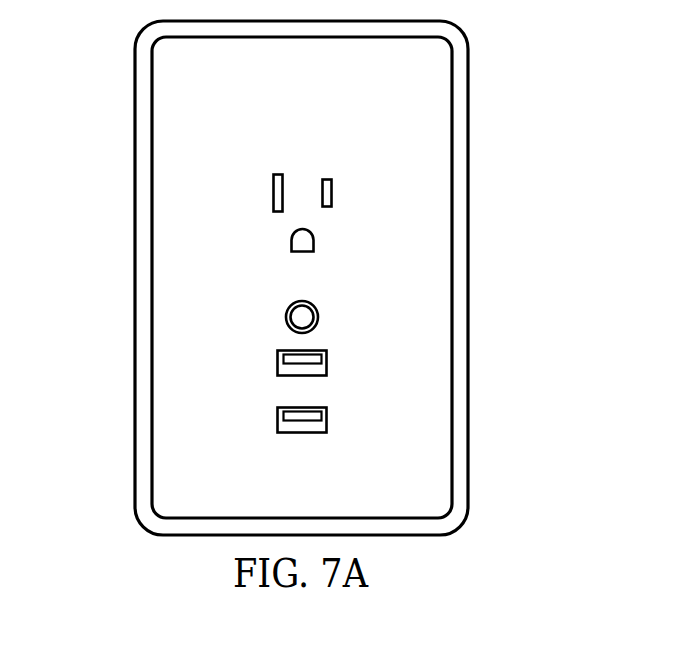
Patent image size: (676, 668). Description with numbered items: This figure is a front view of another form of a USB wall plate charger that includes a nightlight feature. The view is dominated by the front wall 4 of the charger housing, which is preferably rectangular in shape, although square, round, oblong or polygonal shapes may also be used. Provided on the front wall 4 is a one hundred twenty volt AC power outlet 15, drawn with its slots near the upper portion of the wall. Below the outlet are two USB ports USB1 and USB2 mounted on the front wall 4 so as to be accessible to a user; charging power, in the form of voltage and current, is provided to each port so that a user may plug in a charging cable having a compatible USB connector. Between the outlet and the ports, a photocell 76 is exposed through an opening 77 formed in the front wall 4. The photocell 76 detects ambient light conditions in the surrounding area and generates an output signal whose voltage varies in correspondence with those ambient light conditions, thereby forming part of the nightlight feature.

The front wall 4 is at (410, 411).
The 120 volt AC power outlet 15 is at (273, 193).
The photocell 76 is at (318, 313).
The opening 77 is at (313, 302).
The USB port USB1 is at (277, 362).
The USB port USB2 is at (277, 420).